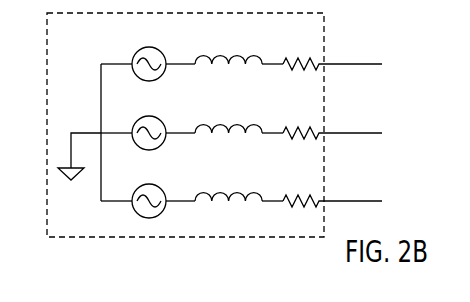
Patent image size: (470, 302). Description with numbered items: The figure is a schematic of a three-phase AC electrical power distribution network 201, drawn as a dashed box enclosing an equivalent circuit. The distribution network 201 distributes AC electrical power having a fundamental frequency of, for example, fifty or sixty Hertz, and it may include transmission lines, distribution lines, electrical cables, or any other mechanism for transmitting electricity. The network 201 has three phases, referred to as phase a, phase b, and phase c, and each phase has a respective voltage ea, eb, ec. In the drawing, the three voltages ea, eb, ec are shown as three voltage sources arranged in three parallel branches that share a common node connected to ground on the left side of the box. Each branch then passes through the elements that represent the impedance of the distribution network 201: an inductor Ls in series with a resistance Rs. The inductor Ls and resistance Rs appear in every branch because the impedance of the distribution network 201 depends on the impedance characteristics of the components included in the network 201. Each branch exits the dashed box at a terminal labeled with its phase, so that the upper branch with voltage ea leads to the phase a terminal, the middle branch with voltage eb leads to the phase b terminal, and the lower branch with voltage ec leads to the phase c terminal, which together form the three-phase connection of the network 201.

The three-phase AC electrical power distribution network 201 is at (78, 42).
The phase a voltage ea is at (149, 53).
The phase b voltage eb is at (149, 122).
The phase c voltage ec is at (149, 188).
The inductor Ls is at (228, 116).
The resistance Rs is at (302, 119).
The phase a is at (351, 52).
The phase b is at (351, 120).
The phase c is at (351, 186).